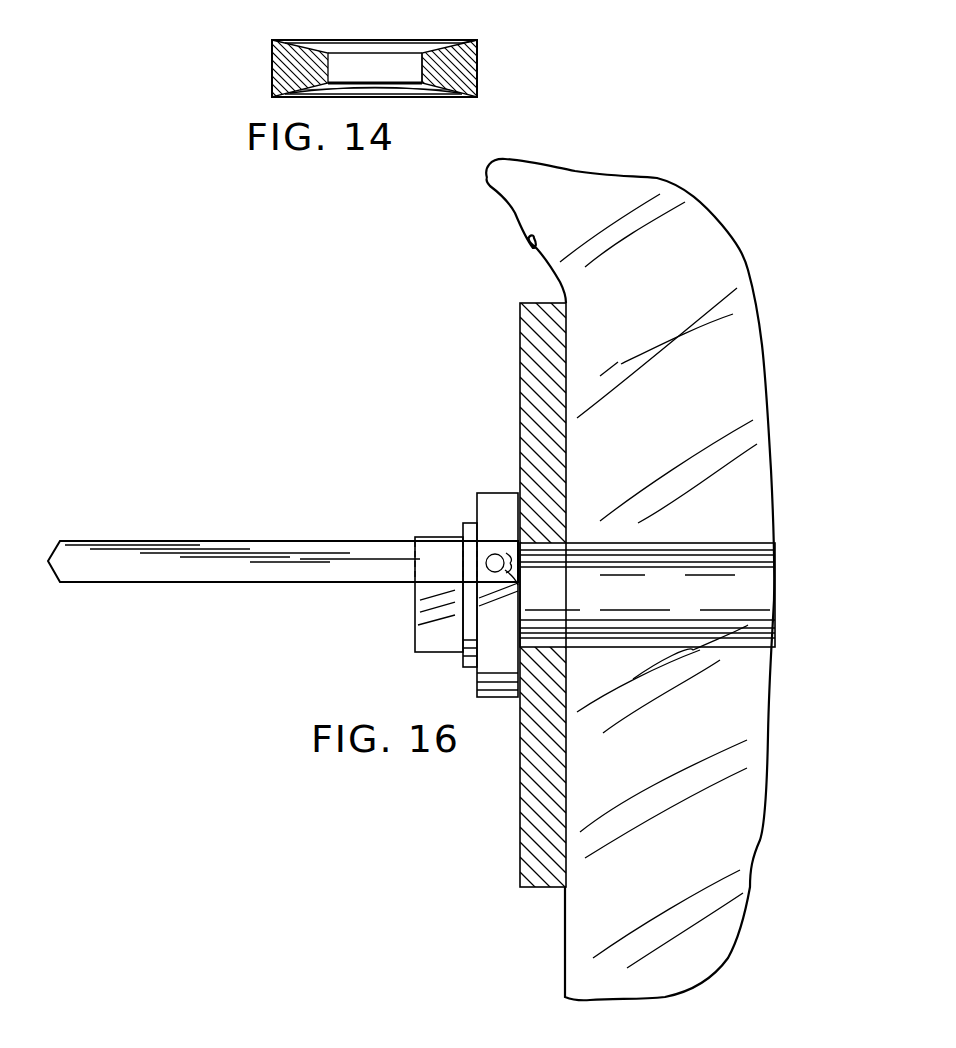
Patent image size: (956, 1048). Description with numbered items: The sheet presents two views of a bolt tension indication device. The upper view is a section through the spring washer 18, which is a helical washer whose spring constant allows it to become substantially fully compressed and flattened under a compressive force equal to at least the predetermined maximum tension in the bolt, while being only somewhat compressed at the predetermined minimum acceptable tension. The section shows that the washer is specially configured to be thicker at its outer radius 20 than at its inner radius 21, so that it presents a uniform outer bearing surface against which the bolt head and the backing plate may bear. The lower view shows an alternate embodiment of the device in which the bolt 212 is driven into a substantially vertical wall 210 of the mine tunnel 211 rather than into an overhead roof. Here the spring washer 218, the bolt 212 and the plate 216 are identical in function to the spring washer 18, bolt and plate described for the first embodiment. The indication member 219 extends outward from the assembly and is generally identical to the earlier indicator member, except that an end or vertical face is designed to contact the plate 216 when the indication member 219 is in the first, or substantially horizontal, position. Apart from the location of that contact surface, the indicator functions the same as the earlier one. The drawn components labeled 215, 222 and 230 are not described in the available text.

In FIG. 14, the spring washer 18 is at (258, 60).
In FIG. 14, the outer radius 20 is at (478, 73).
In FIG. 14, the inner radius 21 is at (418, 66).
In FIG. 16, the vertical wall 210 is at (533, 240).
In FIG. 16, the mine tunnel 211 is at (479, 218).
In FIG. 16, the bolt 212 is at (727, 567).
In FIG. 16, the clamp block 215 is at (447, 537).
In FIG. 16, the plate 216 is at (520, 386).
In FIG. 16, the spring washer 218 is at (500, 493).
In FIG. 16, the indication member 219 is at (260, 536).
In FIG. 16, the pivot pin 222 is at (505, 552).
In FIG. 16, the rod end 230 is at (512, 588).